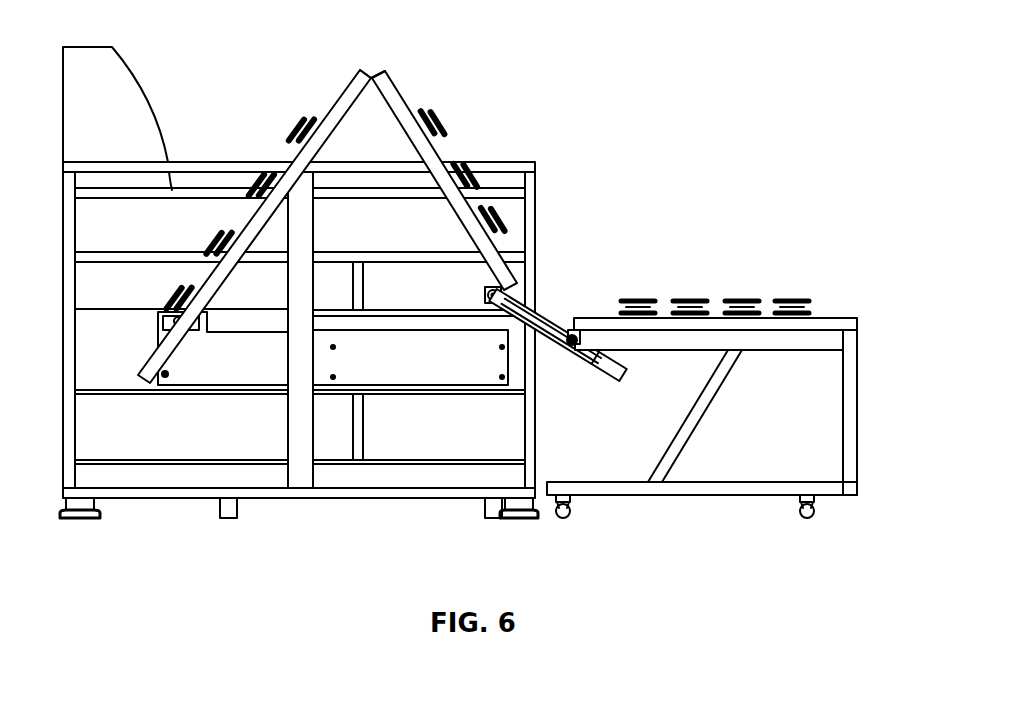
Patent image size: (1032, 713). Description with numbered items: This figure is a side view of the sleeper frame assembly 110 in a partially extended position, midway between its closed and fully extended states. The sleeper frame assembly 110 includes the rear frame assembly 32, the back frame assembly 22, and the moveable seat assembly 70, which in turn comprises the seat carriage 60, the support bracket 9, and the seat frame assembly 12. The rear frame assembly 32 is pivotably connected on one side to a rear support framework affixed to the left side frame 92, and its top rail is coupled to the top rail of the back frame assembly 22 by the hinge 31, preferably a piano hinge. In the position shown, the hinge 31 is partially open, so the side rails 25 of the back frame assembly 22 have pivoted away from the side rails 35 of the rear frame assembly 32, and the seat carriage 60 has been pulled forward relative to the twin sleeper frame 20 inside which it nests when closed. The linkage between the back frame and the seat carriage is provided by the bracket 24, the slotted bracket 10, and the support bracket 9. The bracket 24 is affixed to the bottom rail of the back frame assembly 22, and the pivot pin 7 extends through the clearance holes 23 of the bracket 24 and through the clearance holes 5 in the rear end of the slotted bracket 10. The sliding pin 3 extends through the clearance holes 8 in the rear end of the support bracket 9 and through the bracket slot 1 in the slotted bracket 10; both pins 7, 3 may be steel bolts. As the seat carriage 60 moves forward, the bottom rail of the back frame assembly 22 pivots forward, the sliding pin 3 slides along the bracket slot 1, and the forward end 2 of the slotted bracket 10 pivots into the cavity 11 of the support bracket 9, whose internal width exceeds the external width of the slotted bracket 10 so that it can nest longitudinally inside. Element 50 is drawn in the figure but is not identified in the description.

The bracket slot 1 is at (577, 365).
The forward end 2 is at (626, 366).
The sliding pin 3 is at (569, 346).
The clearance holes 5 is at (495, 303).
The pivot pin 7 is at (487, 296).
The clearance holes 8 is at (574, 330).
The support bracket 9 is at (748, 343).
The slotted bracket 10 is at (607, 376).
The cavity 11 is at (687, 350).
The seat frame assembly 12 is at (840, 318).
The twin sleeper frame 20 is at (537, 212).
The back frame assembly 22 is at (397, 85).
The clearance holes 23 is at (486, 297).
The bracket 24 is at (486, 290).
The side rails 25 is at (436, 156).
The hinge 31 is at (371, 78).
The rear frame assembly 32 is at (345, 92).
The side rails 35 is at (331, 118).
The drive bracket 50 is at (173, 323).
The seat carriage 60 is at (843, 458).
The moveable seat assembly 70 is at (745, 383).
The left side frame 92 is at (205, 162).
The sleeper frame assembly 110 is at (418, 108).